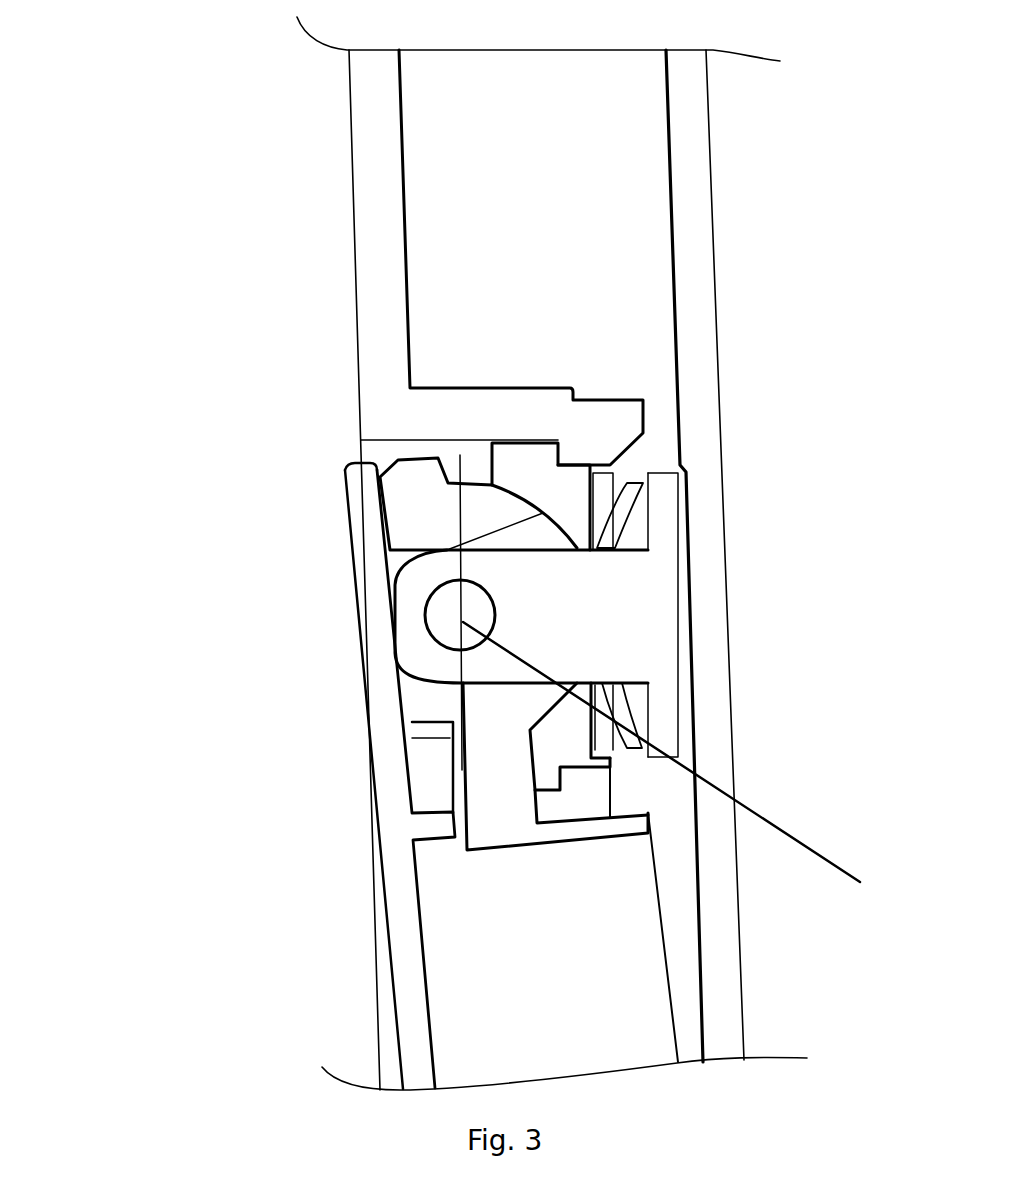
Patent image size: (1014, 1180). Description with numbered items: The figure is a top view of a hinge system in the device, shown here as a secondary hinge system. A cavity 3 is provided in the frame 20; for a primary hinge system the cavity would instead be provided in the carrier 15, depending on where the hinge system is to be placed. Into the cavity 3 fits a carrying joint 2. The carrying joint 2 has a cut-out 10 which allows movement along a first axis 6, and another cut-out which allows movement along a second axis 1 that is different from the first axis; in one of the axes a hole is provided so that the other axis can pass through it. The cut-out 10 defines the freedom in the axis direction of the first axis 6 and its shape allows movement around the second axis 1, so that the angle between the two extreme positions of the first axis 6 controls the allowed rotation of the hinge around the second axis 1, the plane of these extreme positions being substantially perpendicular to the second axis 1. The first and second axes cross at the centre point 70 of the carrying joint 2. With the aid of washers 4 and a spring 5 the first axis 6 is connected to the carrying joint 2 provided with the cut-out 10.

The frame 20 is at (375, 285).
The cut-out 10 is at (537, 535).
The second axis 1 is at (460, 621).
The carrying joint 2 is at (490, 703).
The first axis 6 is at (603, 593).
The washers 4 is at (603, 518).
The spring 5 is at (620, 708).
The cavity 3 is at (577, 733).
The carrier 15 is at (405, 893).
The centre point 70 is at (681, 760).